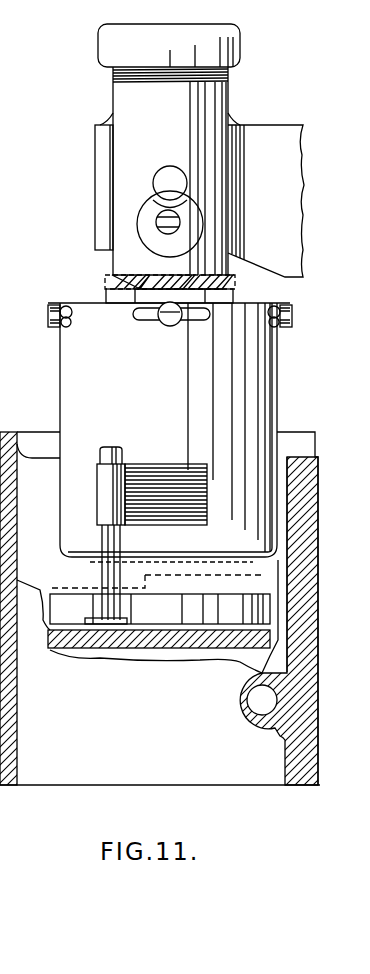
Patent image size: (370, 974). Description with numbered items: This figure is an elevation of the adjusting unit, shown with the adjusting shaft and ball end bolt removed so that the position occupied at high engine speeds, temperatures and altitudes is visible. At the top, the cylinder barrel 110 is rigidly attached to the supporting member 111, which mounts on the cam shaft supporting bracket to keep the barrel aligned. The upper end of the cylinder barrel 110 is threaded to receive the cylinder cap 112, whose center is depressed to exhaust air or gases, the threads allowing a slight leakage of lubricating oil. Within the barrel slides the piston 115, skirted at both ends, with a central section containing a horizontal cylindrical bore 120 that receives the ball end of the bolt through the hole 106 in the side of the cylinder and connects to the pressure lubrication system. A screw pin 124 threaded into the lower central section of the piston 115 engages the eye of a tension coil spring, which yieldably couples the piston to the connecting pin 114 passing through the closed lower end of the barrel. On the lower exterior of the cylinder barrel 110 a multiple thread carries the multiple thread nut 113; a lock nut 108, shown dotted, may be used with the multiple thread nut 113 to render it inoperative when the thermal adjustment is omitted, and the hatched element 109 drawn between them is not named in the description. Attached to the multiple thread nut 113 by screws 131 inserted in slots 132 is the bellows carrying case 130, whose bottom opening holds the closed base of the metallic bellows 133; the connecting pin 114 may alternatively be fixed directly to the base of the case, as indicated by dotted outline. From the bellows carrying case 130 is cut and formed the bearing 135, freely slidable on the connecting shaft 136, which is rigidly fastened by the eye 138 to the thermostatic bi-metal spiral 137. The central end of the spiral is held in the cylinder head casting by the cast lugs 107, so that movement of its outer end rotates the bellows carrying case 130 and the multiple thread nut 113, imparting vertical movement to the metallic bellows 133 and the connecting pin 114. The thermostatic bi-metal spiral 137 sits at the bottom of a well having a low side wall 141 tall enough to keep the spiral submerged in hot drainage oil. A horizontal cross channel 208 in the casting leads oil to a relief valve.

The hole 106 is at (152, 172).
The cast lugs 107 is at (170, 648).
The lock nut 108 is at (232, 286).
The wedges 109 is at (116, 276).
The cylinder barrel 110 is at (127, 97).
The supporting member 111 is at (258, 140).
The cylinder cap 112 is at (152, 31).
The multiple thread nut 113 is at (118, 297).
The connecting pin 114 is at (200, 559).
The piston 115 is at (148, 211).
The cylindrical bore 120 is at (162, 185).
The screw pin 124 is at (166, 231).
The bellows carrying case 130 is at (80, 357).
The screws 131 is at (50, 314).
The slots 132 is at (70, 304).
The metallic bellows 133 is at (145, 485).
The bearing 135 is at (108, 498).
The connecting shaft 136 is at (105, 556).
The thermostatic bi-metal spiral 137 is at (62, 586).
The eye 138 is at (98, 602).
The low side wall 141 is at (248, 571).
The horizontal cross channel 208 is at (250, 698).